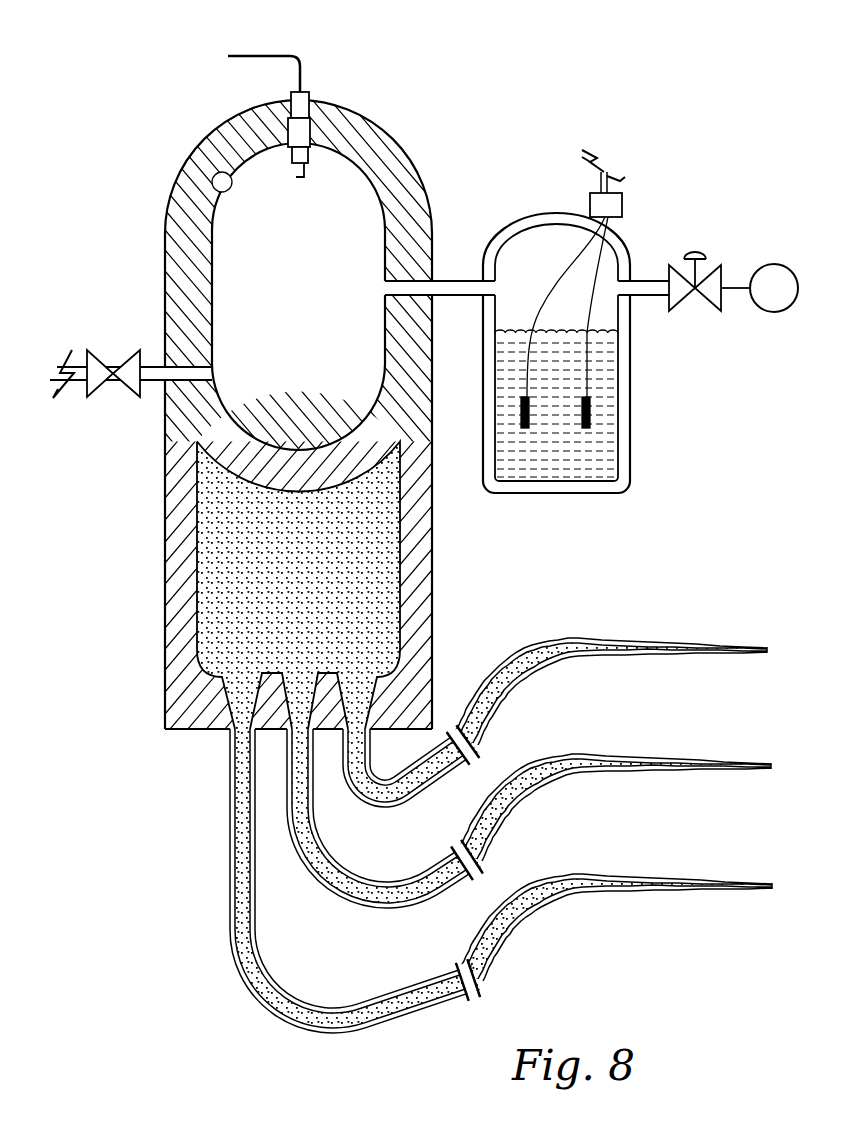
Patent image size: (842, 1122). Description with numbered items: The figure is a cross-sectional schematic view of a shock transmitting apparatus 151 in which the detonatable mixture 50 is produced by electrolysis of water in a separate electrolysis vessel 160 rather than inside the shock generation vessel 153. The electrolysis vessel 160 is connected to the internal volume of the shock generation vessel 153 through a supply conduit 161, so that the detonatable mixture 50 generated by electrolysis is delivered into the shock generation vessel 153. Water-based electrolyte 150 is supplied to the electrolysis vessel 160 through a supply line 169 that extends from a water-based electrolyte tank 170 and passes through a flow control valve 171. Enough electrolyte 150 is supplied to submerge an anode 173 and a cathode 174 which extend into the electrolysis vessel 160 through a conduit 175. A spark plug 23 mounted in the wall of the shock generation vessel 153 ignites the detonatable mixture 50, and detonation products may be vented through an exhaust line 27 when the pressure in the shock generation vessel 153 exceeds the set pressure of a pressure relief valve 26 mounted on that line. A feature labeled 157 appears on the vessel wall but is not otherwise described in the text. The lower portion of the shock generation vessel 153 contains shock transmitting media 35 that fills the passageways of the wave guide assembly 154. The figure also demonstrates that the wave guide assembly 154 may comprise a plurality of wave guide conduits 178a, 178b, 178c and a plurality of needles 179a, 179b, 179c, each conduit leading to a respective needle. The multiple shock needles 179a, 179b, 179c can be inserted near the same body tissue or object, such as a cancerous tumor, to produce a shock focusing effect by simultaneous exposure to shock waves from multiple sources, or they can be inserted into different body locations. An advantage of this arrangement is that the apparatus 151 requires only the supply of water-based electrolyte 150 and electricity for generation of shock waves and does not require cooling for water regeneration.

The spark plug 23 is at (307, 92).
The pressure relief valve 26 is at (122, 362).
The exhaust line 27 is at (150, 383).
The shock transmitting media 35 is at (378, 556).
The detonatable mixture 50 is at (373, 200).
The water-based electrolyte 150 is at (605, 375).
The shock transmitting apparatus 151 is at (662, 76).
The shock generation vessel 153 is at (358, 133).
The wave guide assembly 154 is at (188, 748).
The port 157 is at (222, 174).
The electrolysis vessel 160 is at (547, 212).
The supply conduit 161 is at (452, 281).
The supply line 169 is at (648, 296).
The water-based electrolyte tank 170 is at (790, 265).
The flow control valve 171 is at (707, 267).
The anode 173 is at (598, 418).
The cathode 174 is at (535, 428).
The conduit 175 is at (622, 205).
The wave guide conduit 178a is at (473, 695).
The wave guide conduit 178b is at (497, 792).
The wave guide conduit 178c is at (495, 908).
The needle 179a is at (733, 646).
The needle 179b is at (728, 763).
The needle 179c is at (733, 882).